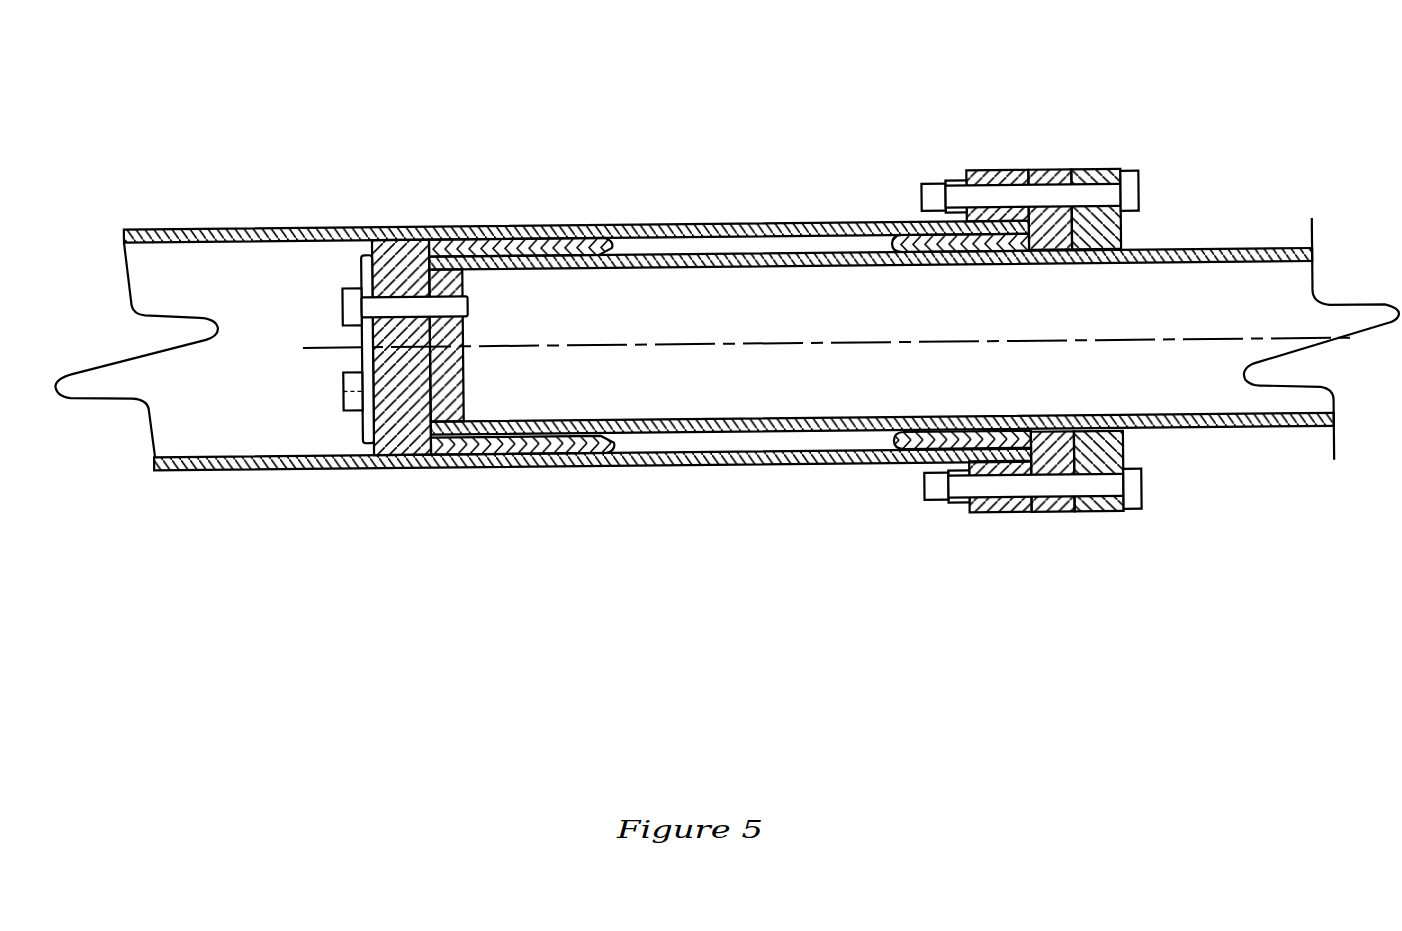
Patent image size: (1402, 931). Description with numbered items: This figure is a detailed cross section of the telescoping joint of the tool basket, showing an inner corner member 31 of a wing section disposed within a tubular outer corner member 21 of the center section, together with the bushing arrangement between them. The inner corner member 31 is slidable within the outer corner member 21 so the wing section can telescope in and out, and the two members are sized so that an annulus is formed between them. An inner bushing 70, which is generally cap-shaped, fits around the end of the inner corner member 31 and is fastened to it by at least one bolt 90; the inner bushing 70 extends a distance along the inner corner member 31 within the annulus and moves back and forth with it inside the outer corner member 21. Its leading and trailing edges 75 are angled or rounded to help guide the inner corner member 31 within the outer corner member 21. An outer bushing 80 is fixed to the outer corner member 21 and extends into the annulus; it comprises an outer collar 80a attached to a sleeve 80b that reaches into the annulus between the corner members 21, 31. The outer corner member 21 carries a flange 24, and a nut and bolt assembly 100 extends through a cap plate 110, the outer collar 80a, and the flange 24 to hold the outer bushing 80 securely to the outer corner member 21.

The outer corner member 21 is at (447, 232).
The inner corner member 31 is at (716, 428).
The inner bushing 70 is at (405, 458).
The leading and trailing edges 75 is at (372, 237).
The bolt 90 is at (345, 282).
The sleeve 80b is at (907, 230).
The outer bushing 80 is at (1035, 183).
The outer collar 80a is at (1060, 215).
The cap plate 110 is at (1130, 244).
The flange 24 is at (998, 173).
The nut and bolt assembly 100 is at (1142, 180).